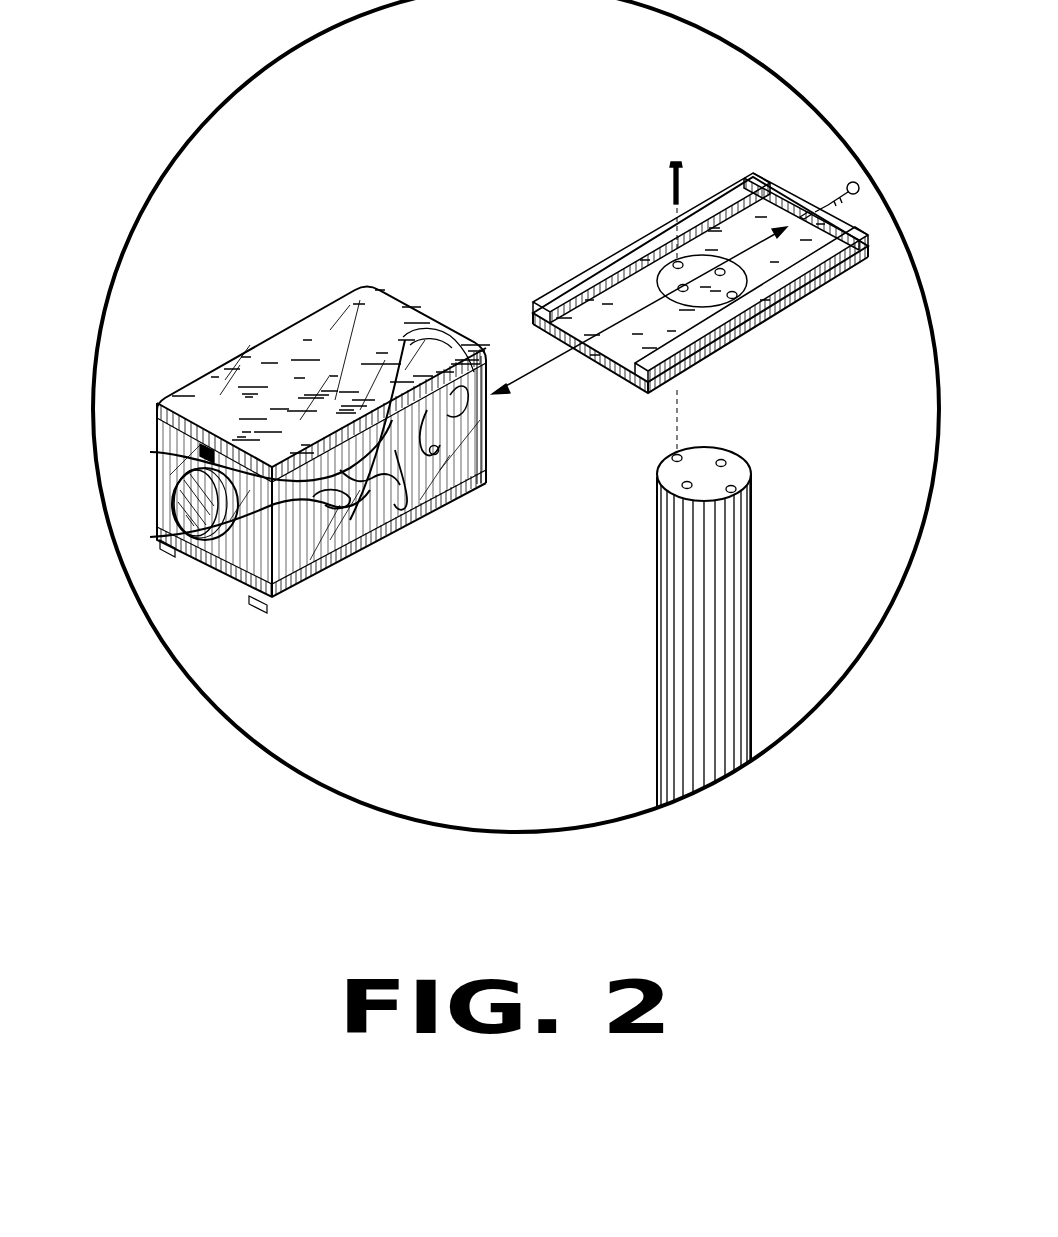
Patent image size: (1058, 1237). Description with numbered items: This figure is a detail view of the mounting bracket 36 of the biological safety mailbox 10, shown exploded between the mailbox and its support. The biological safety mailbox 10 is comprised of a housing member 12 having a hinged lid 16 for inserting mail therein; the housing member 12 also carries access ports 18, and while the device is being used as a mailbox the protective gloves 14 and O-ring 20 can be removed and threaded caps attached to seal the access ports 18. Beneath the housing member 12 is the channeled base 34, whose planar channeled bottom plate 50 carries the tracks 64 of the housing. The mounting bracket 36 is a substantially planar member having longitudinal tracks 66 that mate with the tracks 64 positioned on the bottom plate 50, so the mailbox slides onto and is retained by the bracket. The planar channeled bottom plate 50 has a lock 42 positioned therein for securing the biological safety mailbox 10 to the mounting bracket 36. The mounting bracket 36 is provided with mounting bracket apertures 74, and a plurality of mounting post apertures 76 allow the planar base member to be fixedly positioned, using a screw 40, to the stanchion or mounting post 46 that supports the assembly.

The biological safety mailbox 10 is at (262, 213).
The housing member 12 is at (152, 457).
The protective gloves 14 is at (397, 530).
The lid 16 is at (320, 323).
The access port 18 is at (180, 527).
The O-ring 20 is at (196, 456).
The channeled base 34 is at (313, 580).
The mounting bracket 36 is at (722, 345).
The screw 40 is at (676, 158).
The lock 42 is at (437, 456).
The mounting post 46 is at (752, 505).
The bottom plate of housing member 50 is at (170, 553).
The tracks of housing member 64 is at (257, 600).
The tracks of mounting bracket 66 is at (622, 363).
The mounting bracket apertures 74 is at (680, 288).
The mounting post apertures 76 is at (686, 485).